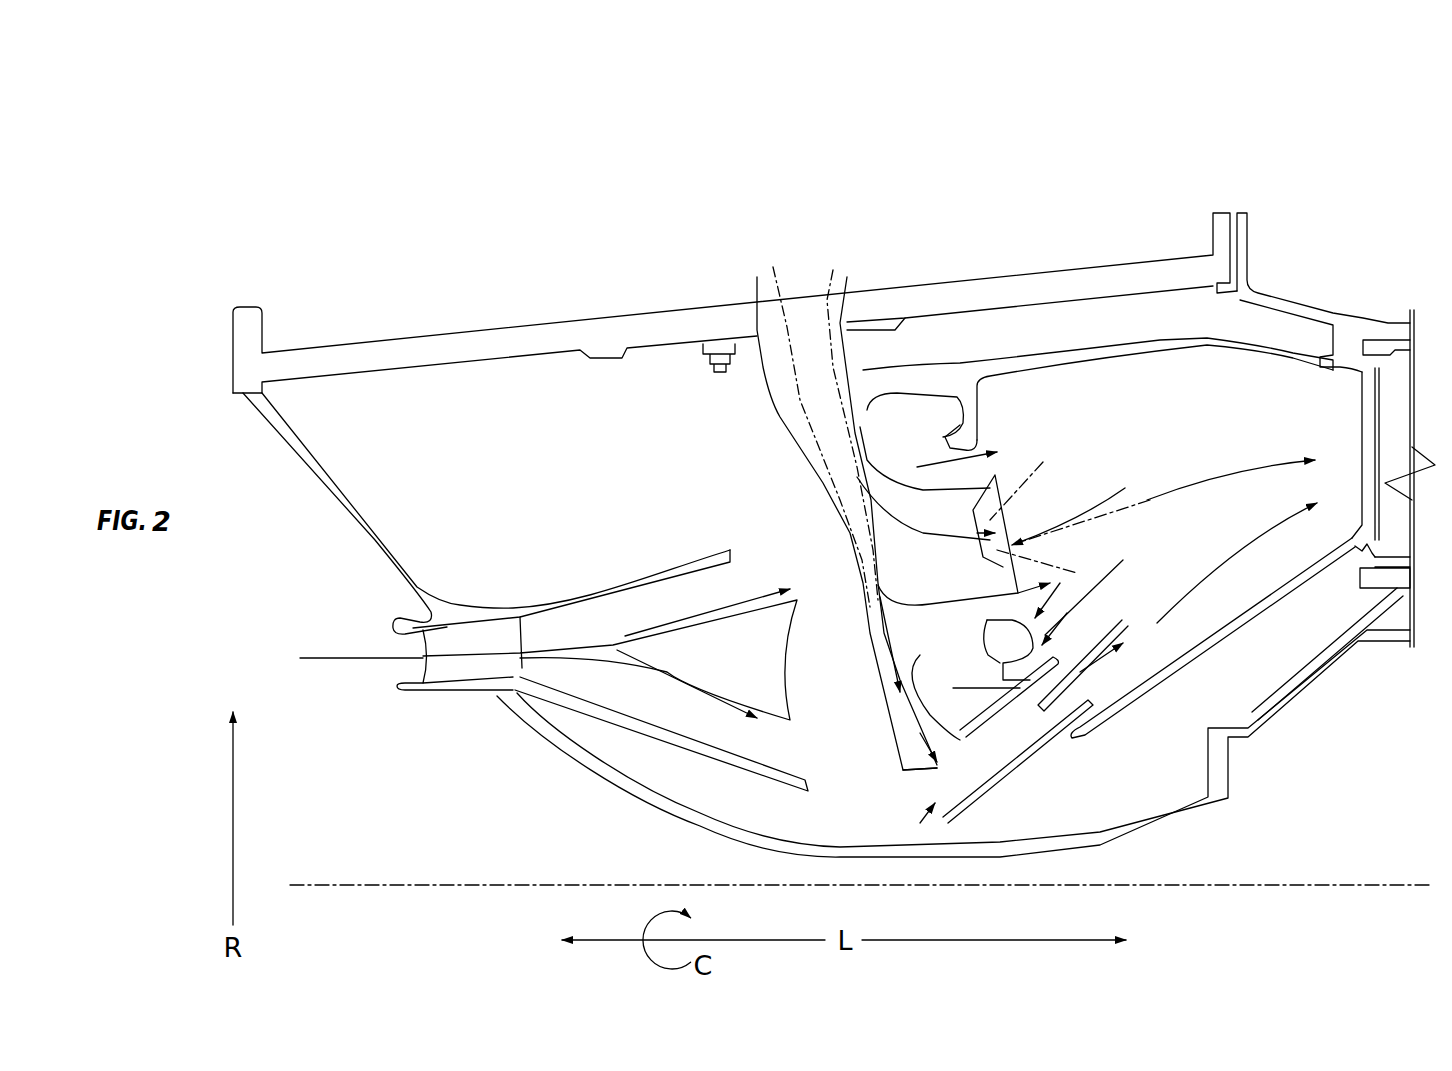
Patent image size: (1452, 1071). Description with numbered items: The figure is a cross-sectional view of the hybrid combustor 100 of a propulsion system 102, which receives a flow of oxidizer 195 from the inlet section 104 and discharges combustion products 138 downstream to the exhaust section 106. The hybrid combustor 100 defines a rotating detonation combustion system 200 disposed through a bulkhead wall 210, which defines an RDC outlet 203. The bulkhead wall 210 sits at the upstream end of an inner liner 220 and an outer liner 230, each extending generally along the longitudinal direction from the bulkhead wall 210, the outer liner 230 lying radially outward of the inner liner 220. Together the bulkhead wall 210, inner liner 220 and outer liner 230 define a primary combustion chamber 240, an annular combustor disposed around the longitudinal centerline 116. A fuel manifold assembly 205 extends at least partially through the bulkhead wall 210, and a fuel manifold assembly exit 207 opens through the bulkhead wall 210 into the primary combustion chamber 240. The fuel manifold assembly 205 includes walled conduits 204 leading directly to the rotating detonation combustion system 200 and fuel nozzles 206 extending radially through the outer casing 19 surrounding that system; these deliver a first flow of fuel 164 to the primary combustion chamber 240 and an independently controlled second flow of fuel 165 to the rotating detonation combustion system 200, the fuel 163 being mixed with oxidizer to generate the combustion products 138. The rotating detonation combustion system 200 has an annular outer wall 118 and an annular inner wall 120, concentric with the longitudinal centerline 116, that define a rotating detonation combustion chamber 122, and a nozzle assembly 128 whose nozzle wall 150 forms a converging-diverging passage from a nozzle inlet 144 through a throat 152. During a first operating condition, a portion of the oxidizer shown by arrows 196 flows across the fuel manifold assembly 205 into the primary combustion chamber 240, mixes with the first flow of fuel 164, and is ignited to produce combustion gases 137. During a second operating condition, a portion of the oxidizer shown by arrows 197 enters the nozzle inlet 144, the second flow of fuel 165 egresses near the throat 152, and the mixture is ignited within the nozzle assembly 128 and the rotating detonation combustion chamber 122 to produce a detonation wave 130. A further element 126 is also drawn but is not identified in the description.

The outer casing 19 is at (588, 328).
The hybrid combustor 100 is at (942, 236).
The propulsion system 102 is at (985, 146).
The inlet section 104 is at (225, 250).
The exhaust section 106 is at (1451, 178).
The longitudinal centerline 116 is at (1320, 885).
The annular outer wall 118 is at (1042, 650).
The annular inner wall 120 is at (1050, 738).
The rotating detonation combustion chamber 122 is at (965, 754).
The combustor liner 126 is at (1097, 686).
The nozzle assembly 128 is at (968, 803).
The detonation wave 130 is at (1097, 650).
The combustion gases 137 is at (1165, 492).
The combustion products 138 is at (1200, 580).
The nozzle inlet 144 is at (907, 825).
The nozzle wall 150 is at (930, 782).
The throat 152 is at (1005, 775).
The fuel 163 is at (803, 318).
The first flow of fuel 164 is at (920, 532).
The second flow of fuel 165 is at (876, 615).
The flow of oxidizer 195 is at (340, 660).
The oxidizer portion (arrows) 196 is at (742, 597).
The oxidizer portion (arrows) 197 is at (667, 672).
The rotating detonation combustion system 200 is at (1064, 742).
The RDC outlet 203 is at (1092, 603).
The walled conduits 204 is at (833, 268).
The fuel manifold assembly 205 is at (975, 485).
The fuel nozzle 206 is at (787, 407).
The fuel manifold assembly exit 207 is at (1078, 499).
The bulkhead wall 210 is at (1064, 582).
The inner liner 220 is at (1225, 622).
The outer liner 230 is at (1207, 343).
The primary combustion chamber 240 is at (1260, 443).